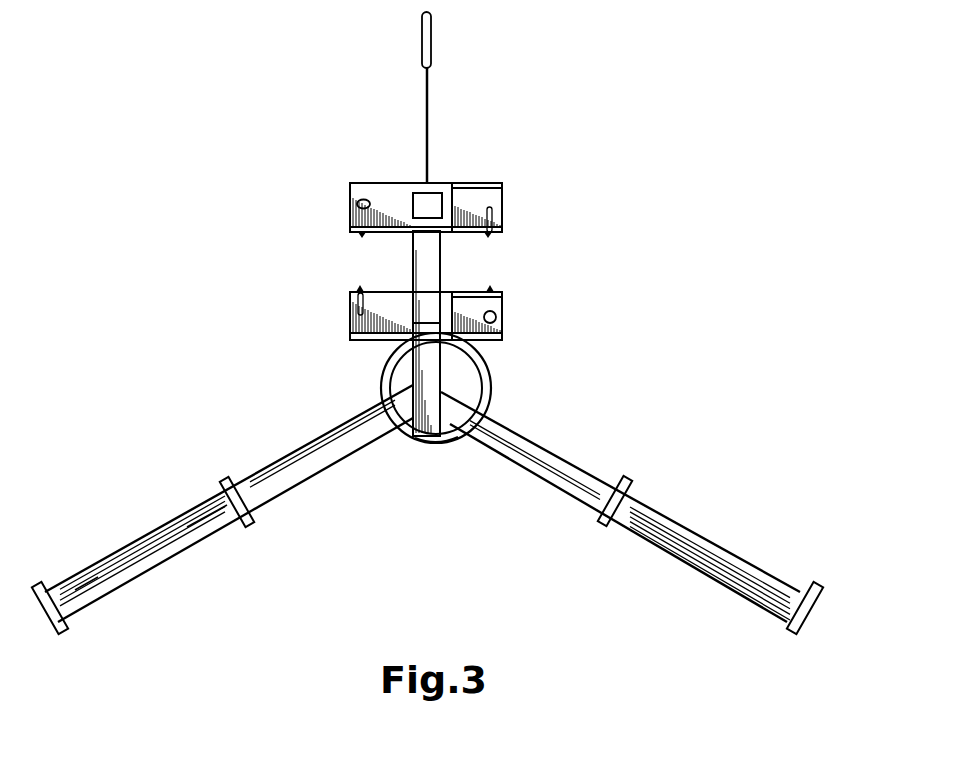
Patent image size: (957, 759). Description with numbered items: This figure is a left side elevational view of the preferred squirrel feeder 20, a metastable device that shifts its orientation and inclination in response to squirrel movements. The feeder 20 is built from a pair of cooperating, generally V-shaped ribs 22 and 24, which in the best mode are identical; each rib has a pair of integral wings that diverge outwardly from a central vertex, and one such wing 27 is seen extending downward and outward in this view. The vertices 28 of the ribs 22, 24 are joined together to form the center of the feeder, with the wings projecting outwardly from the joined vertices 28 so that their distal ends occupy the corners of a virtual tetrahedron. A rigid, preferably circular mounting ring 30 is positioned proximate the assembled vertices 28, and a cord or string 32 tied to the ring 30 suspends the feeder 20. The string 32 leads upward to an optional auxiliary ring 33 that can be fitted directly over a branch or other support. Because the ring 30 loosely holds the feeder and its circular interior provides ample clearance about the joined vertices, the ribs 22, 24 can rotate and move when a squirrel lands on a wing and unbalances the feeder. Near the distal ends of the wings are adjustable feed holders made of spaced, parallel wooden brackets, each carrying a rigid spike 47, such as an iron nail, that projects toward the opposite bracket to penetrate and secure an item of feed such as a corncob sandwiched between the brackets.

The squirrel feeder 20 is at (187, 212).
The V-shaped rib 22 is at (118, 498).
The V-shaped rib 24 is at (525, 257).
The wing 27 is at (577, 465).
The vertex 28 is at (454, 452).
The mounting ring 30 is at (491, 381).
The cord or string 32 is at (428, 107).
The auxiliary ring 33 is at (431, 36).
The spike 47 is at (90, 594).